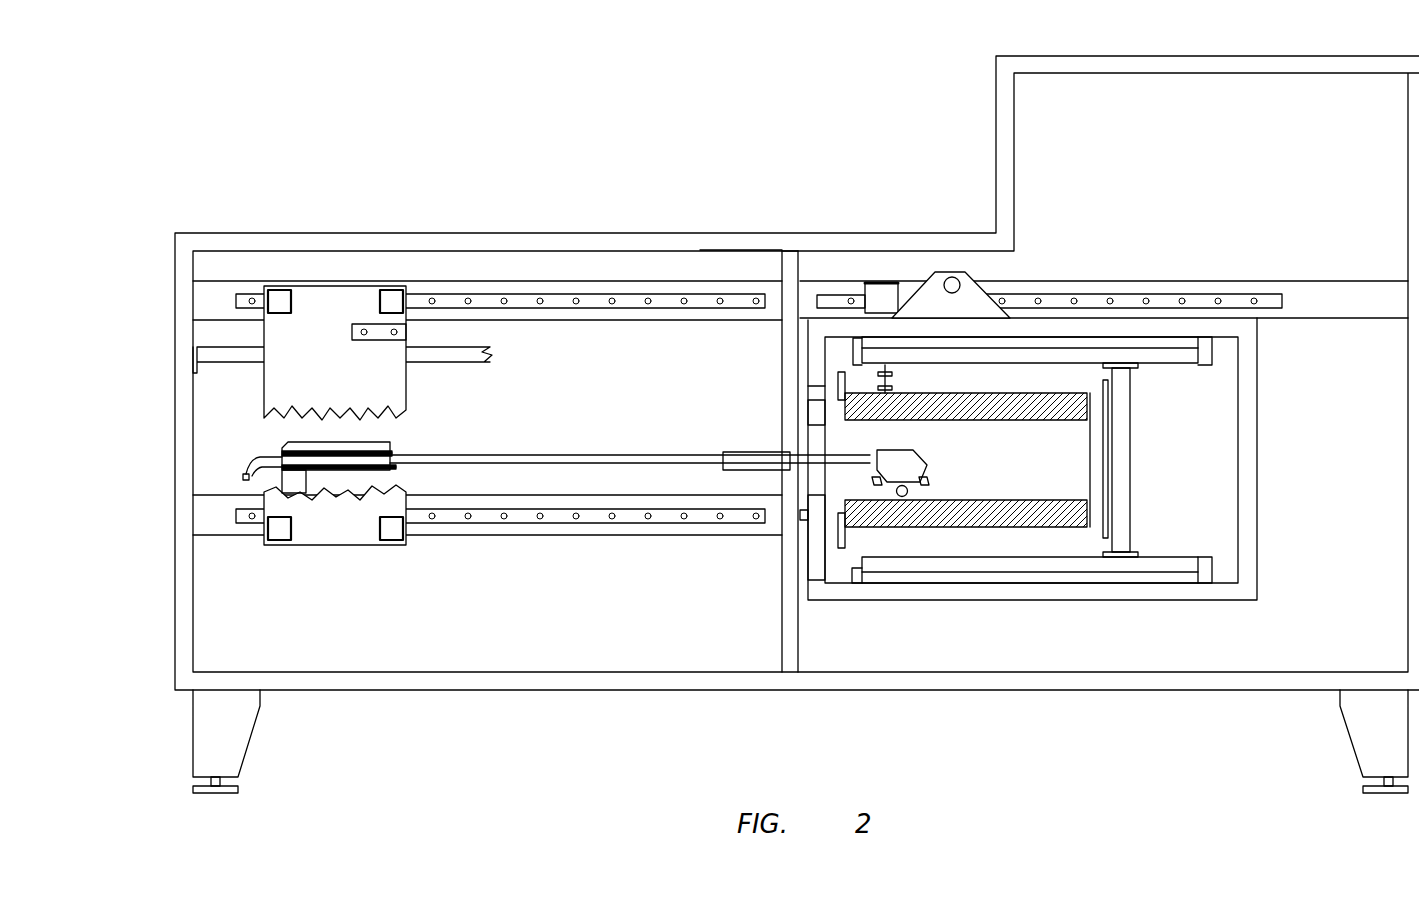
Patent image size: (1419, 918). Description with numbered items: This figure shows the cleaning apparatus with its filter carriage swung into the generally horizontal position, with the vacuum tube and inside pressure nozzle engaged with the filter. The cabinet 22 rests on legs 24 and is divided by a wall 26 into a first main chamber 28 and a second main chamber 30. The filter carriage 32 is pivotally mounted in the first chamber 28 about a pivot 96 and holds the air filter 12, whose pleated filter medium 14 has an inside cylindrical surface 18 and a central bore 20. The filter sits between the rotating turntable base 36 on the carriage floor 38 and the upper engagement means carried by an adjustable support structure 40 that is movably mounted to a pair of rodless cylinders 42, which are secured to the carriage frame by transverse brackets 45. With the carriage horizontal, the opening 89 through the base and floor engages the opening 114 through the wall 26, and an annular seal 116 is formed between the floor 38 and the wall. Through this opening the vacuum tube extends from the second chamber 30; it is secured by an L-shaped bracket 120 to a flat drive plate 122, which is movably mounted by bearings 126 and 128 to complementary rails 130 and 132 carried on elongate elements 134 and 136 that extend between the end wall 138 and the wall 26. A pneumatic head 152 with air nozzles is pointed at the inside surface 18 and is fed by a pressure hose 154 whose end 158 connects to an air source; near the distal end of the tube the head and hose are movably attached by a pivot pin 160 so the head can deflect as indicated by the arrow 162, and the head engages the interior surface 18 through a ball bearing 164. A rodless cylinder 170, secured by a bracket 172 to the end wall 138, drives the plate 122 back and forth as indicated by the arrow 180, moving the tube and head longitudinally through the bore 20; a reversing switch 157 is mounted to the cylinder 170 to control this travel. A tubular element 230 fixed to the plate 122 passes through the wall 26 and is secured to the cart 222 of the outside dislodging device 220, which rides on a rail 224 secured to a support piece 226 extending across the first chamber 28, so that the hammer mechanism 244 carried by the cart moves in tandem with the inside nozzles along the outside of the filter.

The air filter 12 is at (1007, 528).
The filter medium 14 is at (1030, 535).
The inside cylindrical surface 18 is at (1047, 418).
The central bore 20 is at (965, 418).
The cabinet 22 is at (605, 698).
The legs 24 is at (260, 740).
The wall 26 is at (808, 272).
The first main chamber 28 is at (1030, 218).
The second main chamber 30 is at (715, 263).
The filter carriage 32 is at (935, 605).
The base 36 is at (828, 570).
The floor 38 is at (828, 598).
The adjustable support structure 40 is at (1130, 500).
The rodless cylinders 42 is at (1170, 357).
The brackets 45 is at (1203, 352).
The opening 89 is at (832, 442).
The pivot 96 is at (970, 292).
The opening 114 is at (800, 412).
The annular seal 116 is at (808, 542).
The L-shaped bracket 120 is at (340, 452).
The drive plate 122 is at (408, 375).
The bearings 126 is at (398, 300).
The bearings 128 is at (393, 532).
The rail 130 is at (622, 298).
The rail 132 is at (588, 525).
The elongate element 134 is at (533, 288).
The elongate element 136 is at (487, 525).
The end wall 138 is at (200, 622).
The pneumatic head 152 is at (893, 452).
The pneumatic pressure hose 154 is at (286, 458).
The none 157 is at (820, 486).
The end 158 is at (246, 470).
The pivot pin 160 is at (723, 456).
The double headed arrow 162 is at (950, 464).
The ball bearing 164 is at (903, 497).
The rodless cylinder apparatus 170 is at (695, 394).
The bracket 172 is at (196, 362).
The double headed arrow 180 is at (640, 396).
The dislodging device 220 is at (880, 288).
The cart 222 is at (900, 292).
The rail 224 is at (1238, 295).
The support piece 226 is at (1342, 300).
The tubular element 230 is at (437, 330).
The hammer mechanism 244 is at (893, 378).